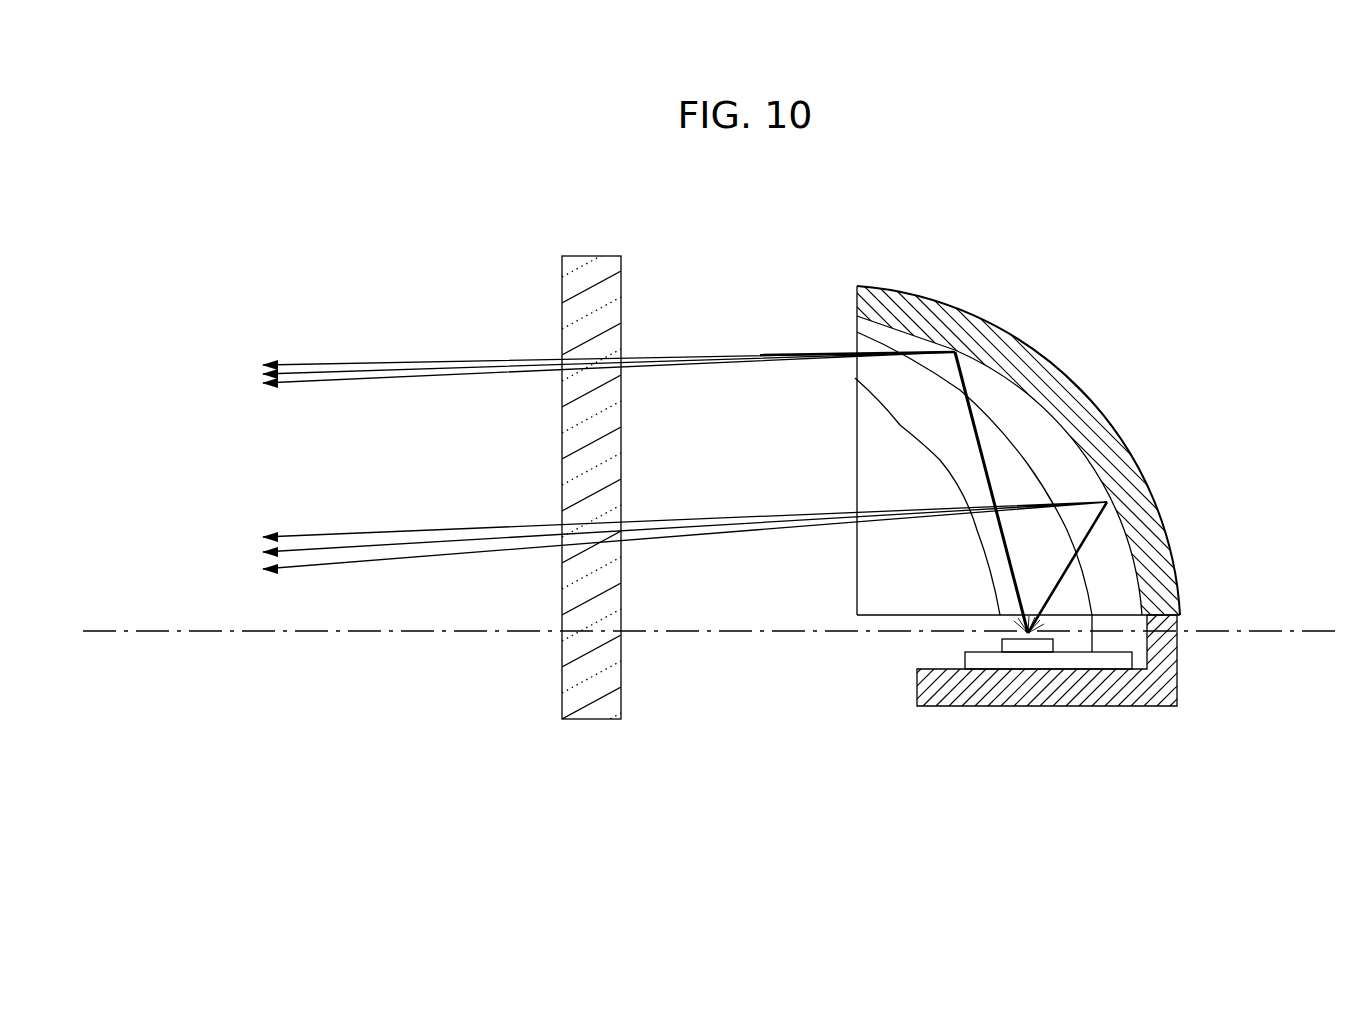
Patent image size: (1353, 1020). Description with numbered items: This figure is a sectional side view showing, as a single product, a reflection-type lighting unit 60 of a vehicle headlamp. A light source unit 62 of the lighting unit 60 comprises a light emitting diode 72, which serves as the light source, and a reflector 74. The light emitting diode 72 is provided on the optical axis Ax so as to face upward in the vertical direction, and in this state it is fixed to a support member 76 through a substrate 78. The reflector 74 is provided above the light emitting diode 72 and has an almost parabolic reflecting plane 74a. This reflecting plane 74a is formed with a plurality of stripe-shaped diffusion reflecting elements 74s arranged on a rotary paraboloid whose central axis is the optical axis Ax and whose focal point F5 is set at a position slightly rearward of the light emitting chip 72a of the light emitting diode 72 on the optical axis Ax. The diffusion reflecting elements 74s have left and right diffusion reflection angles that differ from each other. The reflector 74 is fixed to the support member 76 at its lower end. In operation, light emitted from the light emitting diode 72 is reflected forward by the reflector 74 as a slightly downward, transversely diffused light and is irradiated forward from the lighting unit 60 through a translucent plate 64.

The lighting unit 60 is at (972, 214).
The light source unit 62 is at (797, 280).
The translucent plate 64 is at (562, 289).
The light emitting diode 72 is at (1045, 612).
The light emitting chip 72a is at (985, 630).
The reflector 74 is at (974, 469).
The reflecting plane 74a is at (1047, 417).
The diffusion reflecting elements 74s is at (937, 417).
The support member 76 is at (1003, 709).
The substrate 78 is at (1077, 672).
The focal point F5 is at (1052, 620).
The optical axis Ax is at (213, 630).